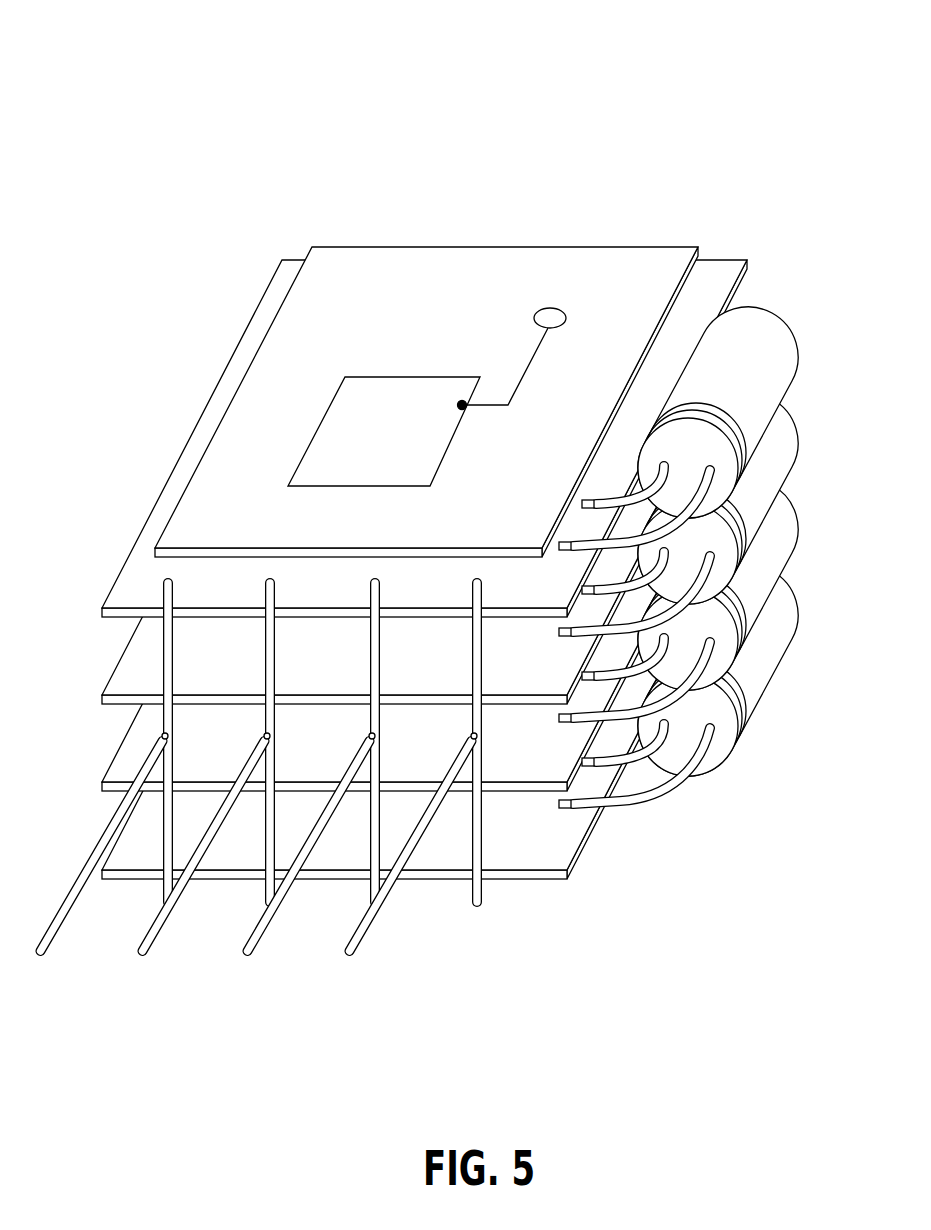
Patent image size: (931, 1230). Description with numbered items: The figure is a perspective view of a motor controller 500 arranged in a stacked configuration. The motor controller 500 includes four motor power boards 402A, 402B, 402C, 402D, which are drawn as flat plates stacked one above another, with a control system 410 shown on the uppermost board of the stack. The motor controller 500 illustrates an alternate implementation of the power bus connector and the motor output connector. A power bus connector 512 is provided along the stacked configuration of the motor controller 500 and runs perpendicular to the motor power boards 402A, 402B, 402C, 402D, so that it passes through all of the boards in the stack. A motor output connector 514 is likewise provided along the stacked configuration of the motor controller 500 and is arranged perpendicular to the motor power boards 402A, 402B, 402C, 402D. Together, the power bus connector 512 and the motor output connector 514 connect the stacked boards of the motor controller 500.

The motor controller 500 is at (414, 488).
The control system 410 is at (386, 377).
The motor power board 402A is at (102, 609).
The motor power board 402B is at (102, 696).
The motor power board 402C is at (102, 783).
The motor power board 402D is at (102, 871).
The power bus connector 512 is at (268, 584).
The motor output connector 514 is at (485, 585).